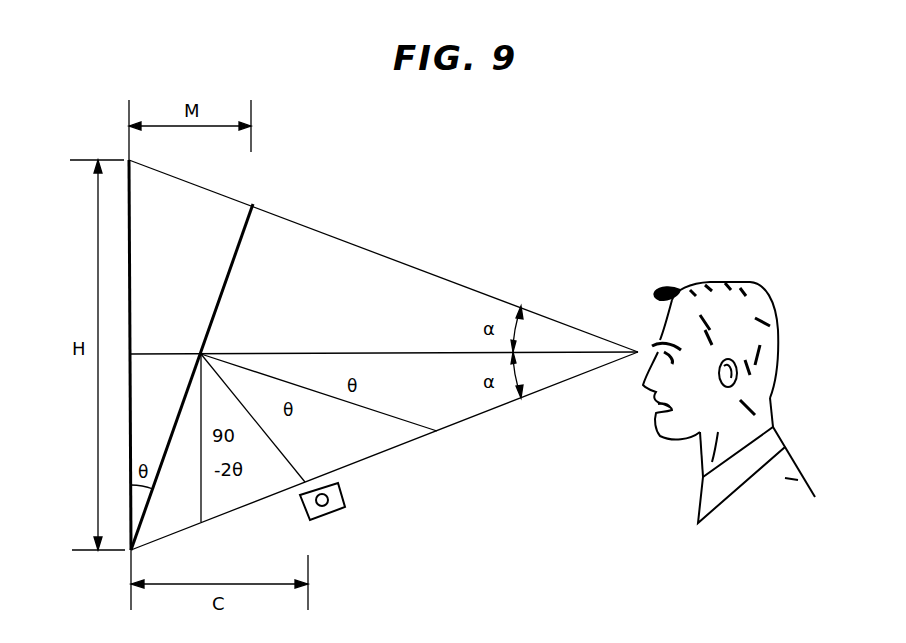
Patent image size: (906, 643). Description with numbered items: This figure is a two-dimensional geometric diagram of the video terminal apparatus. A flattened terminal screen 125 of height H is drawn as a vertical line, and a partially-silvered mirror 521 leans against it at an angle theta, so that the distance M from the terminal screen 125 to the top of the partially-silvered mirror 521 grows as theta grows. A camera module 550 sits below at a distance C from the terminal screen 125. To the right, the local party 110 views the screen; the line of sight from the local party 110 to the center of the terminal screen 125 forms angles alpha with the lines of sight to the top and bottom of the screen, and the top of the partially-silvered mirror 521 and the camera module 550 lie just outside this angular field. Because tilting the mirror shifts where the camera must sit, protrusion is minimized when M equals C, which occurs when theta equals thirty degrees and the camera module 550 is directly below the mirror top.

The local party 110 is at (744, 282).
The terminal screen 125 is at (130, 425).
The partially-silvered mirror 521 is at (240, 237).
The camera module 550 is at (345, 490).